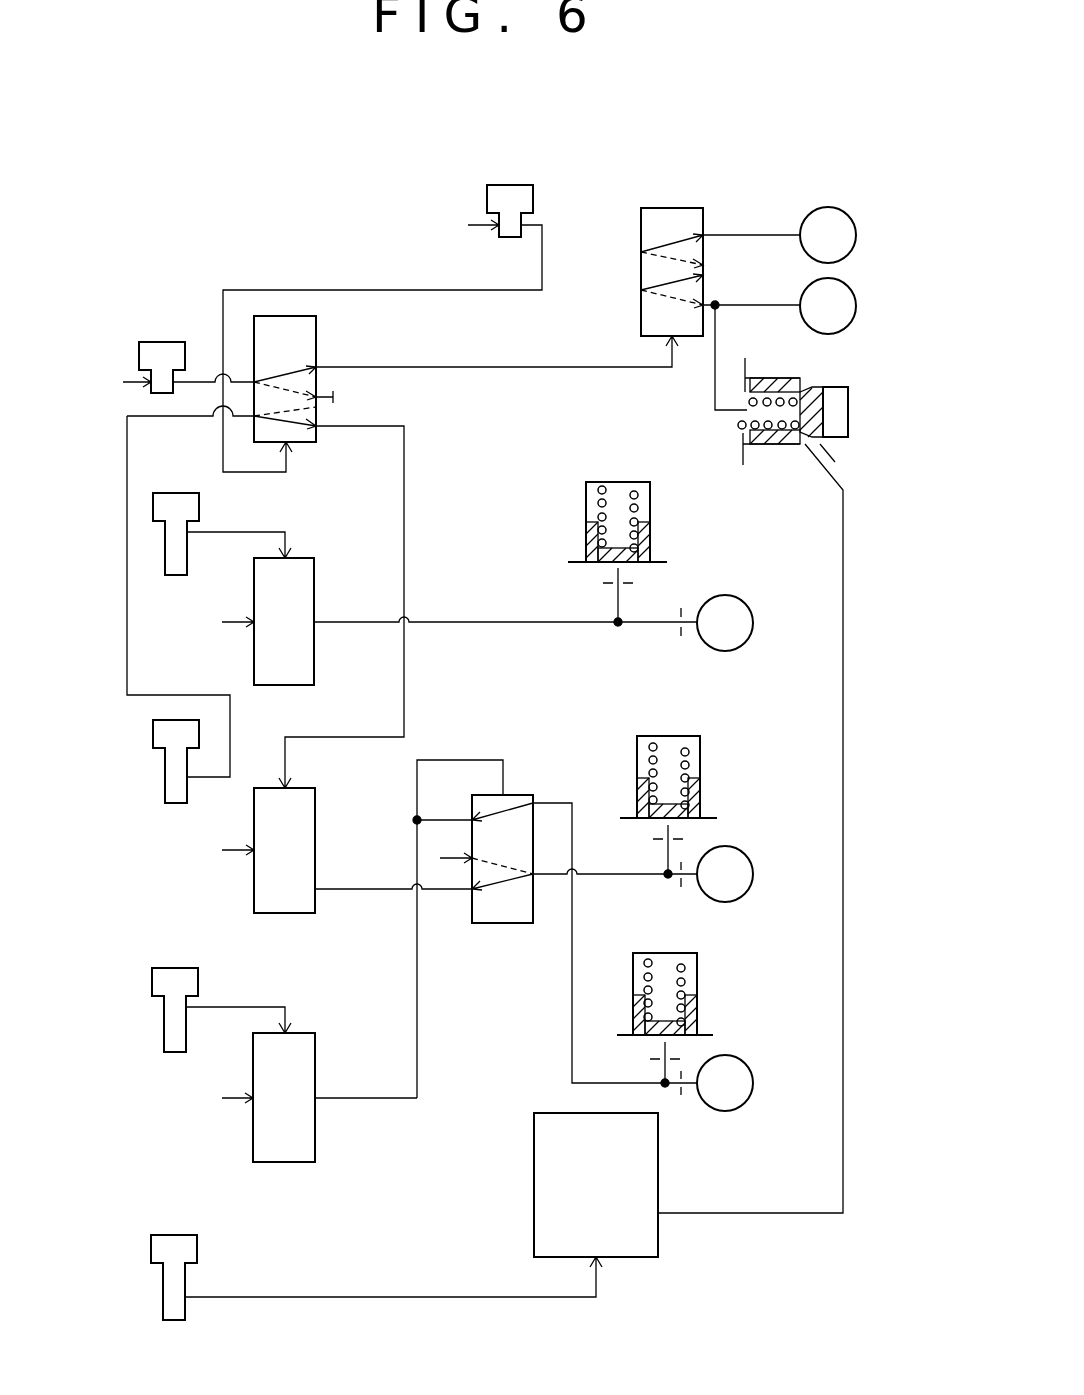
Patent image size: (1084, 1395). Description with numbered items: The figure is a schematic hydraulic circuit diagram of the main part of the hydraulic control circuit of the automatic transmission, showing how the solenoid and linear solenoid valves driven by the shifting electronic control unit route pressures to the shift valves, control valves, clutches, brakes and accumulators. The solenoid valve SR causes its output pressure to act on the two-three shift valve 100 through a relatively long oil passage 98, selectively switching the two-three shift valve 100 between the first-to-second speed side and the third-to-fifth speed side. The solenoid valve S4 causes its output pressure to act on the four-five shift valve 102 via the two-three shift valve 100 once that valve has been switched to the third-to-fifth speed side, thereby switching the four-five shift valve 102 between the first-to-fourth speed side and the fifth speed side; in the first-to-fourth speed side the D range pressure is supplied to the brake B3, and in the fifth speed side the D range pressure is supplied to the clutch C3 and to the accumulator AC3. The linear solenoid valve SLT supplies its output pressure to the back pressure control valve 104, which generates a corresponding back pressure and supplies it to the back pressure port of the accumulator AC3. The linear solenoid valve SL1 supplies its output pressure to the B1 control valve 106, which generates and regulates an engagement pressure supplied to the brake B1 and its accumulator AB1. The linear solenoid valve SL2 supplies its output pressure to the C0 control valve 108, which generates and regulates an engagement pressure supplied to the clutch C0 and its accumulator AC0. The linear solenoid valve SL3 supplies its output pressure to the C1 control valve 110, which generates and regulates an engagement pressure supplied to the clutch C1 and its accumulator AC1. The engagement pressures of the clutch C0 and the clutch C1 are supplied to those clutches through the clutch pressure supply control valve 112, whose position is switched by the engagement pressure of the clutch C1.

The oil passage 98 is at (410, 290).
The 2-3 shift valve 100 is at (316, 337).
The 4-5 shift valve 102 is at (655, 208).
The back pressure control valve 104 is at (658, 1168).
The B1 control valve 106 is at (314, 585).
The C0 control valve 108 is at (315, 818).
The C1 control valve 110 is at (315, 1067).
The clutch pressure supply control valve 112 is at (500, 923).
The solenoid valve S4 is at (163, 342).
The solenoid valve SR is at (511, 185).
The linear solenoid valve SL1 is at (199, 505).
The linear solenoid valve SL2 is at (153, 735).
The linear solenoid valve SL3 is at (198, 982).
The linear solenoid valve SLT is at (197, 1250).
The accumulator AC3 is at (848, 415).
The accumulator AB1 is at (650, 497).
The accumulator AC0 is at (700, 752).
The accumulator AC1 is at (697, 968).
The brake B3 is at (828, 235).
The clutch C3 is at (828, 306).
The brake B1 is at (725, 623).
The clutch C0 is at (725, 874).
The clutch C1 is at (725, 1083).